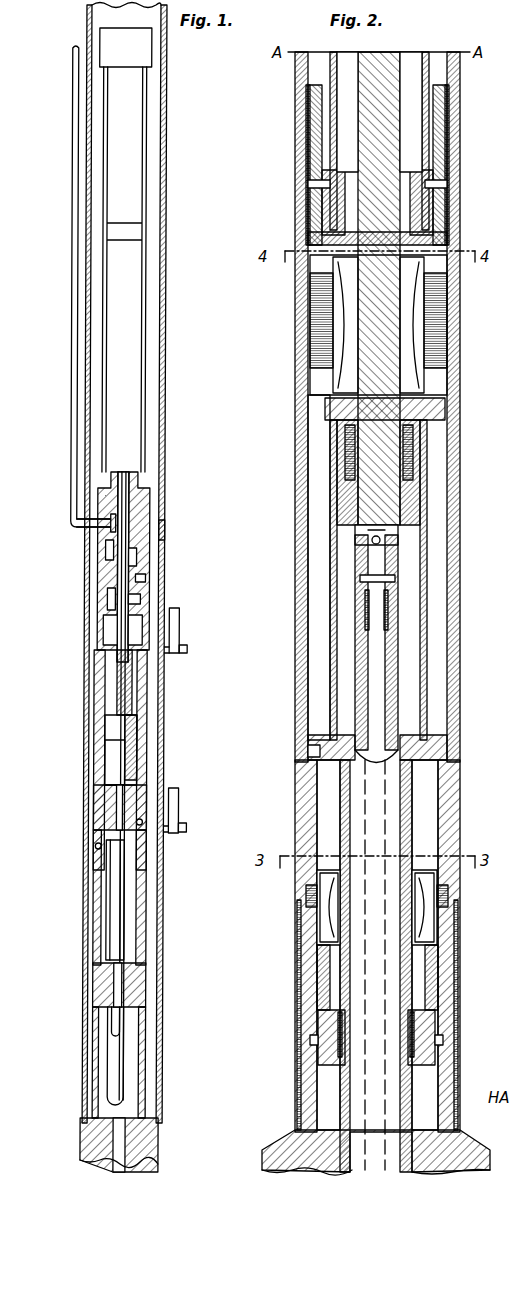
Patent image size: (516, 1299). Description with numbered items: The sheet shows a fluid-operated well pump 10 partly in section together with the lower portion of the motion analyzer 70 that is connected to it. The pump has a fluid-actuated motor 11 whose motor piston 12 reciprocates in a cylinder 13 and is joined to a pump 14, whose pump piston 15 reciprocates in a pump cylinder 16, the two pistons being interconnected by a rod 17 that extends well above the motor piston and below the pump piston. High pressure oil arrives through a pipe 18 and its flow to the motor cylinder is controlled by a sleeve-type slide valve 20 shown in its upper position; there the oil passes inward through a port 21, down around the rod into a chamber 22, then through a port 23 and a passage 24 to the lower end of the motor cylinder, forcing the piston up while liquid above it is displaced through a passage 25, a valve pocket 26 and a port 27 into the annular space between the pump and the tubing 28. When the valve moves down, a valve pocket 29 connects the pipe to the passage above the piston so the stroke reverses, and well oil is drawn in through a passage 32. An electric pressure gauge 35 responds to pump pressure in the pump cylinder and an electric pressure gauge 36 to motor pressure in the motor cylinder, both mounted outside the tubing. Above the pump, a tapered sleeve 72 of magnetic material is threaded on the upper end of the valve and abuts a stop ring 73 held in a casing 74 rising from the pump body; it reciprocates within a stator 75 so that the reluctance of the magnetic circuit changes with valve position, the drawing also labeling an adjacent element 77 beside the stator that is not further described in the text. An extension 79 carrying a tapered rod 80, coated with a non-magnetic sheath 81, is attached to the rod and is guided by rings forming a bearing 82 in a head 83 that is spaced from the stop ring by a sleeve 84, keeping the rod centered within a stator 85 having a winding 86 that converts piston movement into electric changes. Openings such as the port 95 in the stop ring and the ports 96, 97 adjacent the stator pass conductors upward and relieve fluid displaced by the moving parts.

In FIG. 1, the pump 10 is at (82, 655).
In FIG. 2, the pump 10 is at (278, 1132).
In FIG. 1, the fluid-actuated motor 11 is at (90, 686).
In FIG. 1, the motor piston 12 is at (135, 684).
In FIG. 1, the motor cylinder 13 is at (108, 734).
In FIG. 1, the pump 14 is at (93, 862).
In FIG. 1, the pump piston 15 is at (130, 870).
In FIG. 1, the pump cylinder 16 is at (115, 933).
In FIG. 1, the rod 17 is at (125, 482).
In FIG. 2, the rod 17 is at (358, 640).
In FIG. 1, the pipe 18 is at (75, 456).
In FIG. 1, the valve 20 is at (150, 506).
In FIG. 2, the valve 20 is at (335, 1098).
In FIG. 1, the port 21 is at (112, 512).
In FIG. 1, the chamber 22 is at (118, 590).
In FIG. 1, the port 23 is at (143, 598).
In FIG. 1, the passage 24 is at (150, 731).
In FIG. 1, the passage 25 is at (106, 622).
In FIG. 1, the valve pocket 26 is at (112, 562).
In FIG. 1, the port 27 is at (148, 578).
In FIG. 1, the tubing 28 is at (166, 530).
In FIG. 1, the valve pocket 29 is at (95, 539).
In FIG. 1, the passage 32 is at (132, 1148).
In FIG. 1, the electric pressure gauge 35 is at (185, 806).
In FIG. 1, the electric pressure gauge 36 is at (185, 628).
In FIG. 1, the motion analyzer 70 is at (158, 365).
In FIG. 2, the motion analyzer 70 is at (292, 973).
In FIG. 2, the tapered sleeve 72 is at (412, 839).
In FIG. 2, the stop ring 73 is at (418, 757).
In FIG. 1, the casing 74 is at (105, 318).
In FIG. 2, the casing 74 is at (456, 791).
In FIG. 2, the stator 75 is at (447, 903).
In FIG. 2, the bearing 77 is at (325, 919).
In FIG. 2, the extension 79 is at (360, 556).
In FIG. 2, the tapered rod 80 is at (385, 165).
In FIG. 2, the sheath 81 is at (405, 100).
In FIG. 2, the bearing 82 is at (405, 469).
In FIG. 2, the head 83 is at (435, 405).
In FIG. 2, the sleeve 84 is at (425, 529).
In FIG. 2, the stator 85 is at (442, 311).
In FIG. 2, the winding 86 is at (340, 309).
In FIG. 2, the port 95 is at (312, 751).
In FIG. 2, the port 96 is at (318, 403).
In FIG. 2, the port 97 is at (328, 206).